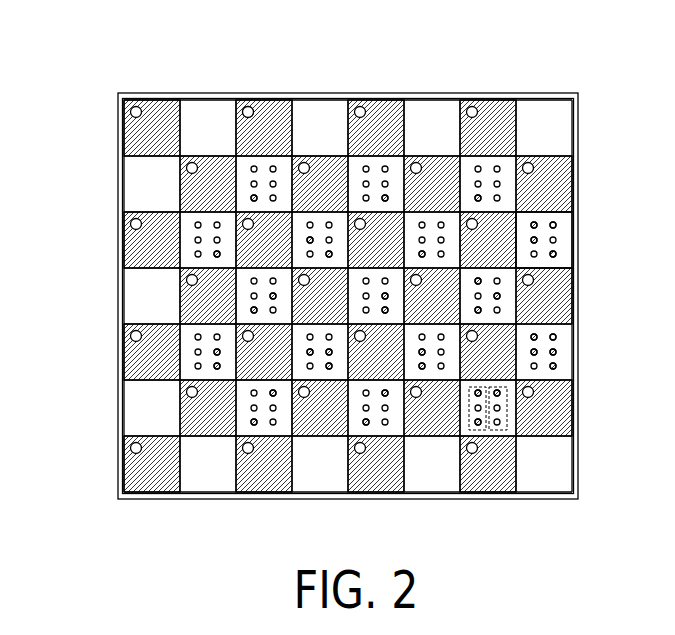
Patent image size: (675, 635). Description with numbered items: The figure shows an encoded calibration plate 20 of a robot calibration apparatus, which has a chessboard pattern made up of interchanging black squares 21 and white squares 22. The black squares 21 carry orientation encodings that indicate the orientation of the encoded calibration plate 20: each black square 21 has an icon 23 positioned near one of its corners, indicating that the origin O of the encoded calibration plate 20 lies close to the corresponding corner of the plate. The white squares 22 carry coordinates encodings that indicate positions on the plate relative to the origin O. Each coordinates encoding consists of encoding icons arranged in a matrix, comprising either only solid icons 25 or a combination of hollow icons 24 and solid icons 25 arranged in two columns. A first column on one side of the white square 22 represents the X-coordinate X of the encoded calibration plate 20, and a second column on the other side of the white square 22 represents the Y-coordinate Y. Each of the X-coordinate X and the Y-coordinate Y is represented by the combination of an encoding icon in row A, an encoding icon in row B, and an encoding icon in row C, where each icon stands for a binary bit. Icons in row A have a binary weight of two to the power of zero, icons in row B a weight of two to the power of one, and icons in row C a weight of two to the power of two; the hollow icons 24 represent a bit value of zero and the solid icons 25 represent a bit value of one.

The encoded calibration plate 20 is at (118, 128).
The black square 21 is at (277, 115).
The white square 22 is at (565, 241).
The icon 23 is at (247, 107).
The hollow icon 24 is at (558, 224).
The solid icon 25 is at (558, 256).
The origin O is at (208, 177).
The row A is at (558, 366).
The row B is at (558, 352).
The row C is at (558, 337).
The X-coordinate X is at (470, 428).
The Y-coordinate Y is at (497, 432).